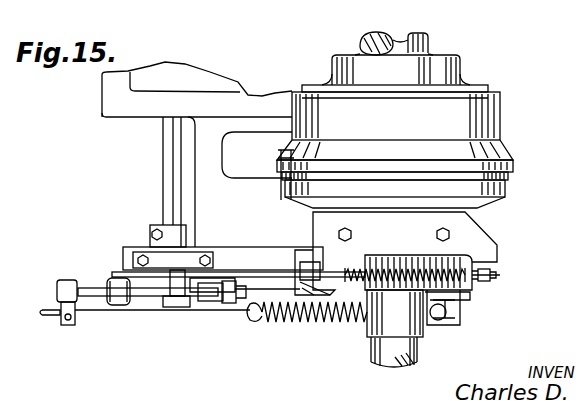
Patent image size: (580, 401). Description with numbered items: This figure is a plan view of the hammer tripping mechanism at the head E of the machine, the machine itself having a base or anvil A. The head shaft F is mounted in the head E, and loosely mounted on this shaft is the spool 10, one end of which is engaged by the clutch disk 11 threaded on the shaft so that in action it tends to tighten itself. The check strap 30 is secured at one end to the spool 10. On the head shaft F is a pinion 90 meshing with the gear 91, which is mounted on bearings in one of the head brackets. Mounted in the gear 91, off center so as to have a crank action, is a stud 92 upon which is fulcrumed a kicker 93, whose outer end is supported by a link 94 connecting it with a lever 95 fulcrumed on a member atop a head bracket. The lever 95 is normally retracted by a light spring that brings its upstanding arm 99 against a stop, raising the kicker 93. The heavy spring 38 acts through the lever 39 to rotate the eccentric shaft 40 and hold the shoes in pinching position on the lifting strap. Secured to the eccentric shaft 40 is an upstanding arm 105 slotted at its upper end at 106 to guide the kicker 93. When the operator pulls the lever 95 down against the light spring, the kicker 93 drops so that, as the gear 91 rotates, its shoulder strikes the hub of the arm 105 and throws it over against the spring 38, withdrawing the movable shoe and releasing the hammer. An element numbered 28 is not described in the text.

The head E is at (256, 103).
The head shaft F is at (430, 43).
The spool 10 is at (458, 72).
The check strap 30 is at (500, 98).
The disk 11 is at (512, 162).
The base or anvil A is at (475, 238).
The upstanding arm 99 is at (306, 268).
The spring housing 28 is at (398, 272).
The gear 91 is at (466, 291).
The pinion 90 is at (413, 288).
The stud 92 is at (432, 318).
The spring 38 is at (305, 324).
The lever 95 is at (238, 272).
The link 94 is at (196, 278).
The kicker 93 is at (156, 296).
The lever 39 is at (84, 287).
The eccentric shaft 40 is at (178, 308).
The upstanding arm 105 is at (210, 302).
The slot 106 is at (224, 304).